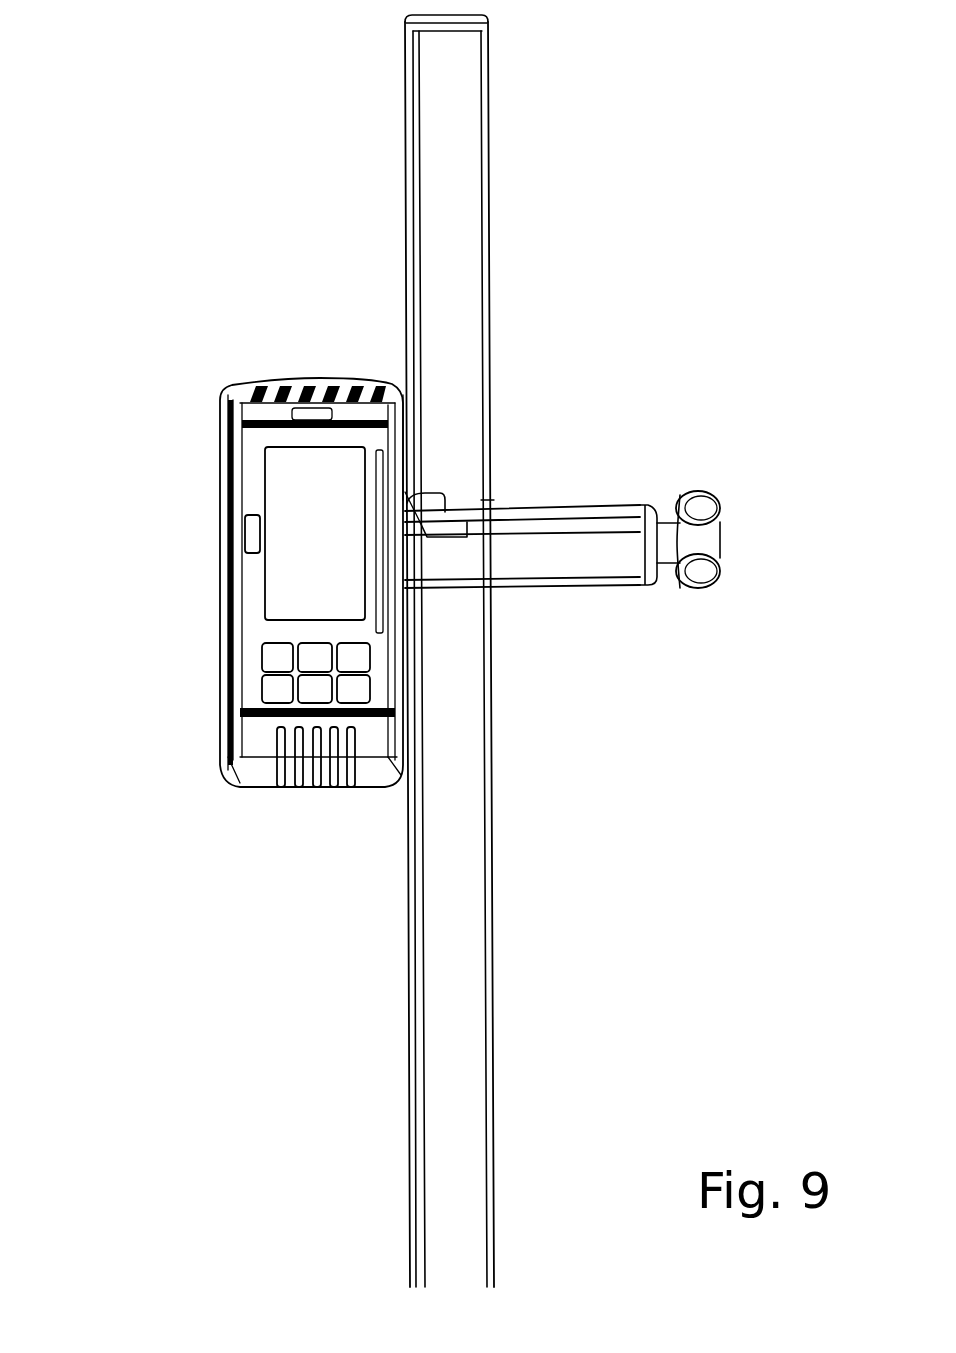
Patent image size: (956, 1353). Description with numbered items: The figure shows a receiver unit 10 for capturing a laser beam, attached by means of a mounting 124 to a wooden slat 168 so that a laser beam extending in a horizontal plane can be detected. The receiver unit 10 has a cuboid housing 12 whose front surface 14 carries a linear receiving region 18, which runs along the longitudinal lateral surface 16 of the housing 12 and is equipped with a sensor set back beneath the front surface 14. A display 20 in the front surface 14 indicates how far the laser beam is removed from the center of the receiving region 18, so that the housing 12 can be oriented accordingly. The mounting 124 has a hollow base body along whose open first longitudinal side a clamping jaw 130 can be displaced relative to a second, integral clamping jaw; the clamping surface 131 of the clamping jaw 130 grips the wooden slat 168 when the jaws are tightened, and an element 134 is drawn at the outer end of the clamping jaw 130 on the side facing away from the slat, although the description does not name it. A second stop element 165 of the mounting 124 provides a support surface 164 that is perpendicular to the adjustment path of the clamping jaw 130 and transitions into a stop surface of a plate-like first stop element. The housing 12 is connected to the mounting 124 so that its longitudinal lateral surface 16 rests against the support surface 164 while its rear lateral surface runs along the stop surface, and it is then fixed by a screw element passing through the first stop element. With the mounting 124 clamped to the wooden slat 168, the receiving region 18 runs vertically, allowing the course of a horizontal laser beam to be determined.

The receiver unit 10 is at (142, 263).
The housing 12 is at (243, 658).
The front surface 14 is at (252, 588).
The longitudinal lateral surface 16 is at (413, 402).
The receiving region 18 is at (413, 421).
The display 20 is at (298, 483).
The mounting 124 is at (623, 567).
The clamping jaw 130 is at (405, 490).
The clamping surface 131 is at (468, 522).
The knob 134 is at (722, 533).
The support surface 164 is at (438, 497).
The second stop element 165 is at (492, 503).
The wooden slat 168 is at (453, 1023).